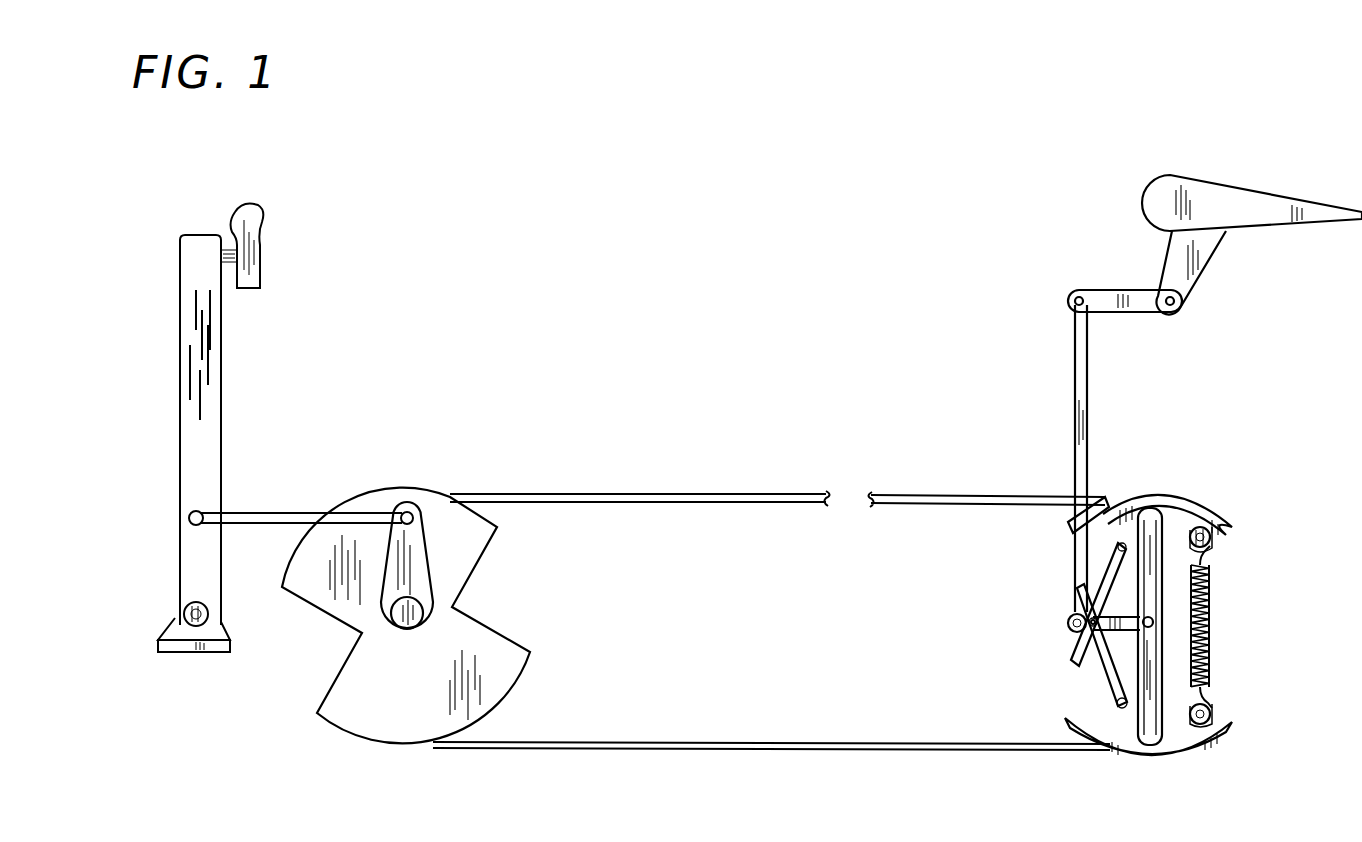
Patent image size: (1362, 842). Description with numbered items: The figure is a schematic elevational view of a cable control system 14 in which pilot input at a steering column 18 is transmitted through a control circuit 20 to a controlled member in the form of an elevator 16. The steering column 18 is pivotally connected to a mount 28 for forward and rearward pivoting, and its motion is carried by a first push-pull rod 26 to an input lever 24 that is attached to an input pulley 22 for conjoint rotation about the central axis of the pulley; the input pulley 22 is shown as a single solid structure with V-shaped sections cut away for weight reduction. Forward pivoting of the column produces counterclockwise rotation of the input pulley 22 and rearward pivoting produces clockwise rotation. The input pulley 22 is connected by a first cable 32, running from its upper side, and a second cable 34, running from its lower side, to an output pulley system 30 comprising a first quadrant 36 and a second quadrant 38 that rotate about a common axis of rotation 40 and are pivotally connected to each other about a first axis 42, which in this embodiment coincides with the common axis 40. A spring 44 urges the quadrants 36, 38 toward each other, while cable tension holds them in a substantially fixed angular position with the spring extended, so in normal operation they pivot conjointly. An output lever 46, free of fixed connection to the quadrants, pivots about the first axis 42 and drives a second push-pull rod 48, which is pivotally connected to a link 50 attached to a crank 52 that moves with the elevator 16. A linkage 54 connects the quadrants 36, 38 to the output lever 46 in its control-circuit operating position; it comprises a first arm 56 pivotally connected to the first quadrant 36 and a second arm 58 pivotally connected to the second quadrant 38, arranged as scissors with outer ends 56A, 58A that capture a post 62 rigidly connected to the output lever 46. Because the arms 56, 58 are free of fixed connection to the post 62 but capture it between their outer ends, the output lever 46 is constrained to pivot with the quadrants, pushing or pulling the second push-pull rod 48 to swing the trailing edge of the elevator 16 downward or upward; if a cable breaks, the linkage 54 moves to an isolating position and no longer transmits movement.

The cable control system 14 is at (684, 380).
The elevator 16 is at (1245, 200).
The steering column 18 is at (183, 290).
The control circuit 20 is at (786, 475).
The input pulley 22 is at (515, 655).
The input lever 24 is at (415, 575).
The first push-pull rod 26 is at (263, 513).
The mount 28 is at (165, 641).
The output pulley system 30 is at (1305, 432).
The first cable 32 is at (525, 492).
The second cable 34 is at (682, 751).
The first quadrant 36 is at (1200, 520).
The second quadrant 38 is at (1180, 748).
The common axis of rotation 40 is at (1165, 624).
The first axis 42 is at (1213, 556).
The spring 44 is at (1212, 662).
The output lever 46 is at (1130, 502).
The second push-pull rod 48 is at (1075, 348).
The link 50 is at (1140, 297).
The crank 52 is at (1210, 240).
The linkage 54 is at (1080, 680).
The first arm 56 is at (1118, 548).
The outer end of first arm 56A is at (1075, 655).
The second arm 58 is at (1115, 703).
The outer end of second arm 58A is at (1082, 584).
The post 62 is at (1100, 628).